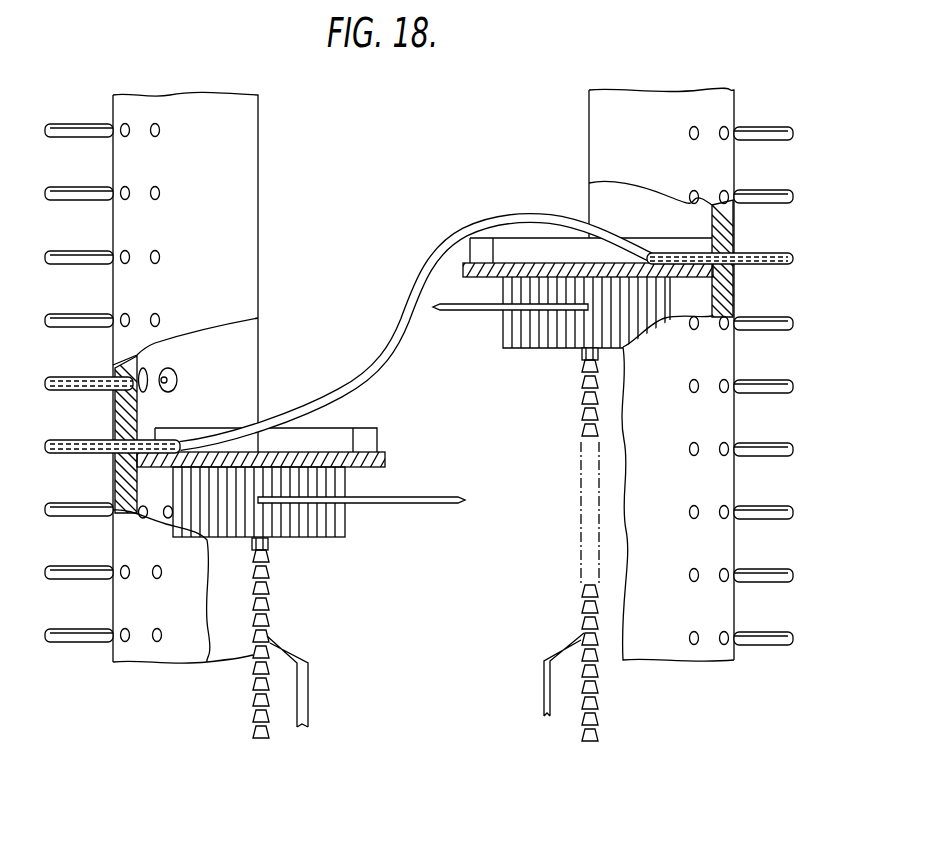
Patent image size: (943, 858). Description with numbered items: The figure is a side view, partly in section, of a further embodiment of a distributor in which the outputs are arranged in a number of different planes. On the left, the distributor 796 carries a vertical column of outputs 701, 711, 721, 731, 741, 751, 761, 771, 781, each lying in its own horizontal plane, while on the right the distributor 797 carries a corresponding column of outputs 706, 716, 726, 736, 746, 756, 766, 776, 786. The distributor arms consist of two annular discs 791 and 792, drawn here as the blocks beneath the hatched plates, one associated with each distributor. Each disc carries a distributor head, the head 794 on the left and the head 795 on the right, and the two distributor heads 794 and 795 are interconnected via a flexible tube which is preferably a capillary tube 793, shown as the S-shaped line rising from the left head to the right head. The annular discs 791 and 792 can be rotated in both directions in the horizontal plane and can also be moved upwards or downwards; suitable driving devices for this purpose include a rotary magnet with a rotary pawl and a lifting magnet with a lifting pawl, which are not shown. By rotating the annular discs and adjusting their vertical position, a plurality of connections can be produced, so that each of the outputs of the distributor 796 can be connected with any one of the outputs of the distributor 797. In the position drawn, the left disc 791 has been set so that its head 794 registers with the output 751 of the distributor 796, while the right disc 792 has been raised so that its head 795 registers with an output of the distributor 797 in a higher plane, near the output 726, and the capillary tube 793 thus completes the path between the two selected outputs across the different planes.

The output 701 is at (94, 123).
The output 711 is at (94, 186).
The output 721 is at (94, 250).
The output 731 is at (94, 313).
The output 741 is at (94, 376).
The output 751 is at (94, 439).
The output 761 is at (94, 502).
The output 771 is at (94, 565).
The output 781 is at (94, 628).
The output 706 is at (770, 119).
The output 716 is at (770, 182).
The output 726 is at (770, 245).
The output 736 is at (770, 309).
The output 746 is at (770, 372).
The output 756 is at (770, 435).
The output 766 is at (770, 498).
The output 776 is at (770, 561).
The output 786 is at (770, 624).
The annular disc 791 is at (387, 452).
The annular disc 792 is at (497, 270).
The capillary tube 793 is at (350, 385).
The distributor head 794 is at (152, 430).
The distributor head 795 is at (710, 252).
The distributor 796 is at (184, 94).
The distributor 797 is at (671, 89).